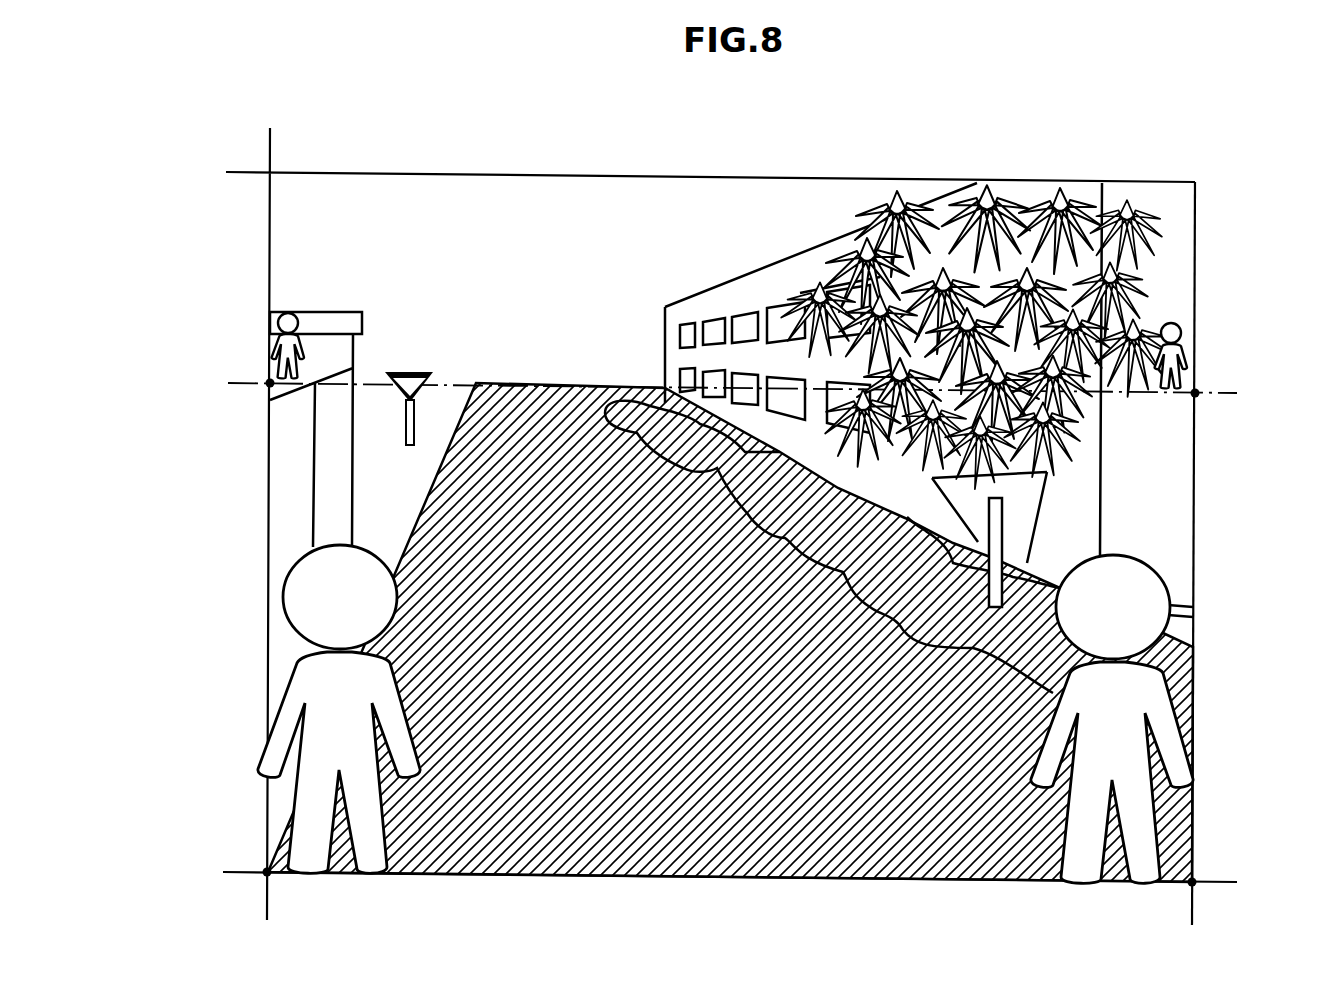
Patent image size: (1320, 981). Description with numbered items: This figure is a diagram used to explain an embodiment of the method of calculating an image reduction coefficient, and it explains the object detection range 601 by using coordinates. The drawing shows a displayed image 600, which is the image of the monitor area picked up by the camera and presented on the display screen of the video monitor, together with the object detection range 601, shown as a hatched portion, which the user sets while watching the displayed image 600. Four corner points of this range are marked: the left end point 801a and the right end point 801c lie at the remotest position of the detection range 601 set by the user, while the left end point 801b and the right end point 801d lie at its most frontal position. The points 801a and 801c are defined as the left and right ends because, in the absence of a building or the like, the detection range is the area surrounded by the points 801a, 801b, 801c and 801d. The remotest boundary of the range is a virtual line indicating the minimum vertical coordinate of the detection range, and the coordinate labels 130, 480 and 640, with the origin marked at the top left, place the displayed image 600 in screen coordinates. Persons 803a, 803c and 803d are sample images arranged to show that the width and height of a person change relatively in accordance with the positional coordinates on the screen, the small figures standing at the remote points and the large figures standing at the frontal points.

The displayed image 600 is at (986, 92).
The object detection range 601 is at (555, 402).
The image width coordinate 640 is at (1198, 537).
The image height coordinate 480 is at (704, 873).
The horizon line y-coordinate 130 is at (704, 384).
The left end point at the remotest position 801a is at (270, 386).
The left end point at the most frontal position 801b is at (267, 872).
The right end point at the remotest position 801c is at (1197, 394).
The right end point at the most frontal position 801d is at (1193, 880).
The person 803a is at (281, 320).
The person 803c is at (1183, 333).
The person 803d is at (308, 570).